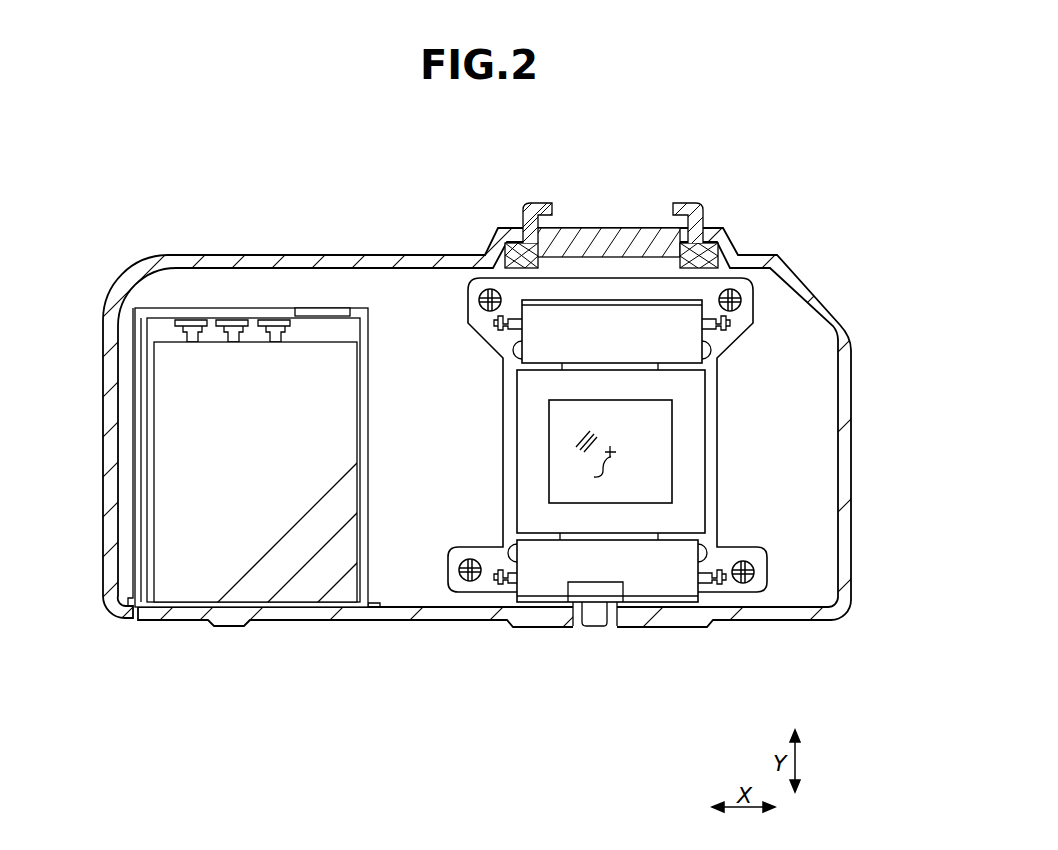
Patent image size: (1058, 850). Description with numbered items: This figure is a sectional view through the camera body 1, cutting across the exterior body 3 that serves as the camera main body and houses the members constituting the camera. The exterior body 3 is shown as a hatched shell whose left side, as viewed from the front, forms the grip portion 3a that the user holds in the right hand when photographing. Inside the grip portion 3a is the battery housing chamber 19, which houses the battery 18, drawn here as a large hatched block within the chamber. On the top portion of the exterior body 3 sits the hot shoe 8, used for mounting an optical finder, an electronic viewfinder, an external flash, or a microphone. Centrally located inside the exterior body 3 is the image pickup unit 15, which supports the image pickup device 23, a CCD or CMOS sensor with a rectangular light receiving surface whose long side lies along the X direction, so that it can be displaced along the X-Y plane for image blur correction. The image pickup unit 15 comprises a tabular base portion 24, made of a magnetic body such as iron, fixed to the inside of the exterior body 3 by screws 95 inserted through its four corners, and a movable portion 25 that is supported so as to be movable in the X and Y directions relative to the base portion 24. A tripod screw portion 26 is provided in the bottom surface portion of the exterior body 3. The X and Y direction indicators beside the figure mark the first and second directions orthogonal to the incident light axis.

The camera body 1 is at (325, 254).
The exterior body 3 is at (763, 621).
The grip portion 3a is at (103, 550).
The hot shoe 8 is at (541, 203).
The image pickup unit 15 is at (486, 460).
The battery 18 is at (263, 600).
The battery housing chamber 19 is at (145, 560).
The image pickup device 23 is at (663, 453).
The base portion 24 is at (706, 413).
The movable portion 25 is at (719, 505).
The tripod screw portion 26 is at (587, 617).
The screws 95 is at (743, 298).